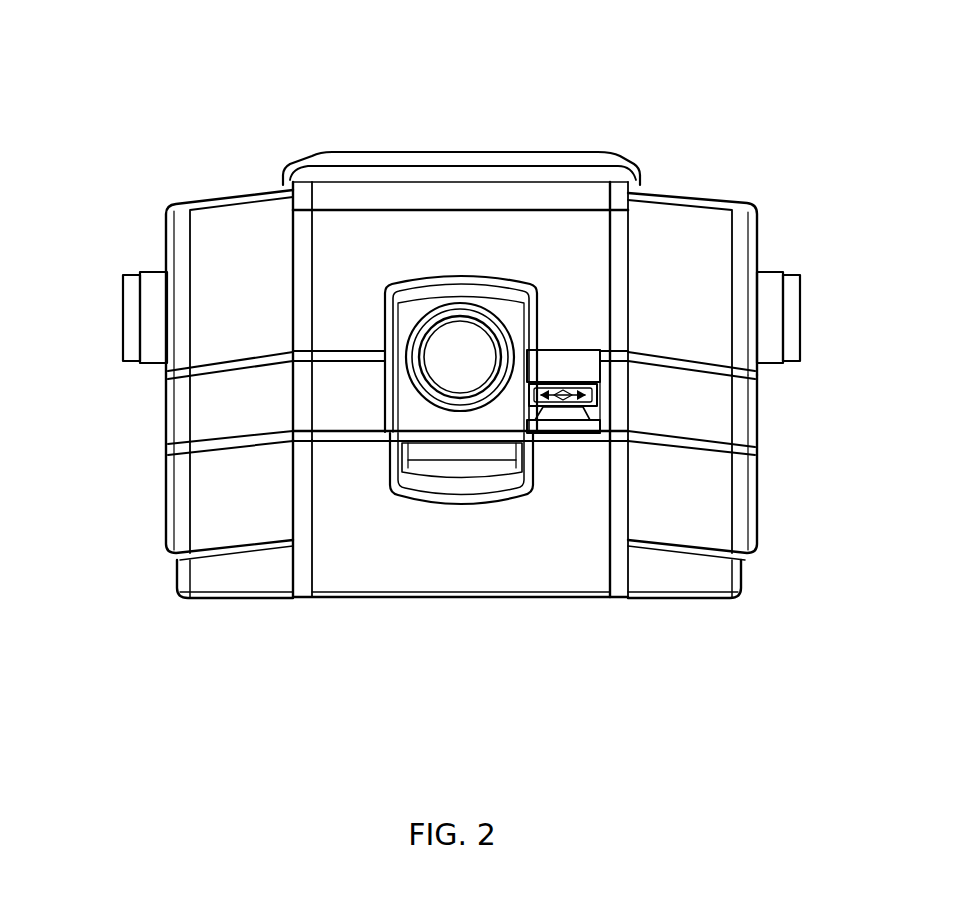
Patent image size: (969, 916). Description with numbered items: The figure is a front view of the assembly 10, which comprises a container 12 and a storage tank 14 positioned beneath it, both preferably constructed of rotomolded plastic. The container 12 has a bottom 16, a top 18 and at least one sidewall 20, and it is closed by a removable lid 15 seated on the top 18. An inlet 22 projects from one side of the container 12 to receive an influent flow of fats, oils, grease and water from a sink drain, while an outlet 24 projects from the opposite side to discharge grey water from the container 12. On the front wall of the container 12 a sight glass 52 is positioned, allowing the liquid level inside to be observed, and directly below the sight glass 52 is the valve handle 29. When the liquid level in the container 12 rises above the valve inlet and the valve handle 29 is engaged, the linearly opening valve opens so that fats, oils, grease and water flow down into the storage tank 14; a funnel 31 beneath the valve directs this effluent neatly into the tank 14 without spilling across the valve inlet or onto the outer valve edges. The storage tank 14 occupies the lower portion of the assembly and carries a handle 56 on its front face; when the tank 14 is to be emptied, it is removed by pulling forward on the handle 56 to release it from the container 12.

The assembly 10 is at (226, 113).
The container 12 is at (370, 263).
The storage tank 14 is at (549, 568).
The removable lid 15 is at (432, 158).
The bottom 16 is at (243, 602).
The top 18 is at (688, 197).
The sidewall 20 is at (757, 410).
The inlet 22 is at (122, 298).
The outlet 24 is at (800, 307).
The valve handle 29 is at (598, 390).
The funnel 31 is at (587, 412).
The sight glass 52 is at (440, 370).
The handle 56 is at (442, 450).